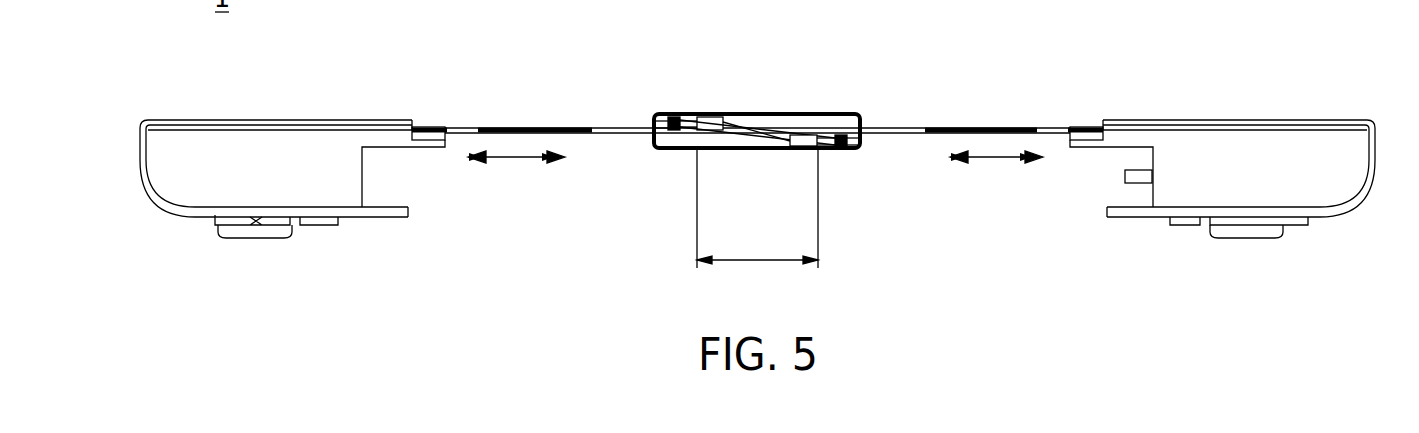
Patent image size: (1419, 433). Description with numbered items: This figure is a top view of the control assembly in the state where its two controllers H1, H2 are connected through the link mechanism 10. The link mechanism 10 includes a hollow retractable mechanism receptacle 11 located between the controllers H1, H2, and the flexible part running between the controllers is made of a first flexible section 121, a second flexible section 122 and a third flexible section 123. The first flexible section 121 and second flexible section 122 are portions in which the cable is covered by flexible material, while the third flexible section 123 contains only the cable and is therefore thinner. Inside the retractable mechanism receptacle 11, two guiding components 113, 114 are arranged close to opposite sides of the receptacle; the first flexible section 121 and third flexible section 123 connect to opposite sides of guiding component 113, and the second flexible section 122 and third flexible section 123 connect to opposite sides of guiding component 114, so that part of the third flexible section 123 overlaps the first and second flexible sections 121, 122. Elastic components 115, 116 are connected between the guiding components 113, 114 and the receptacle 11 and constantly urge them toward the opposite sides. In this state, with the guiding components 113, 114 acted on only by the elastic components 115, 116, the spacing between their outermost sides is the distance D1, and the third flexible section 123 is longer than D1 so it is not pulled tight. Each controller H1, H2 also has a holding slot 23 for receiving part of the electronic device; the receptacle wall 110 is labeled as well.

The controller H1 is at (275, 122).
The controller H2 is at (1246, 122).
The link mechanism 10 is at (842, 200).
The retractable mechanism receptacle 11 is at (757, 160).
The housing bottom wall 110 is at (678, 150).
The guiding component 113 is at (807, 135).
The guiding component 114 is at (710, 117).
The elastic component 115 is at (840, 150).
The elastic component 116 is at (674, 117).
The first flexible section 121 is at (549, 127).
The second flexible section 122 is at (910, 130).
The third flexible section 123 is at (763, 130).
The holding slot 23 is at (392, 182).
The distance D1 is at (757, 223).